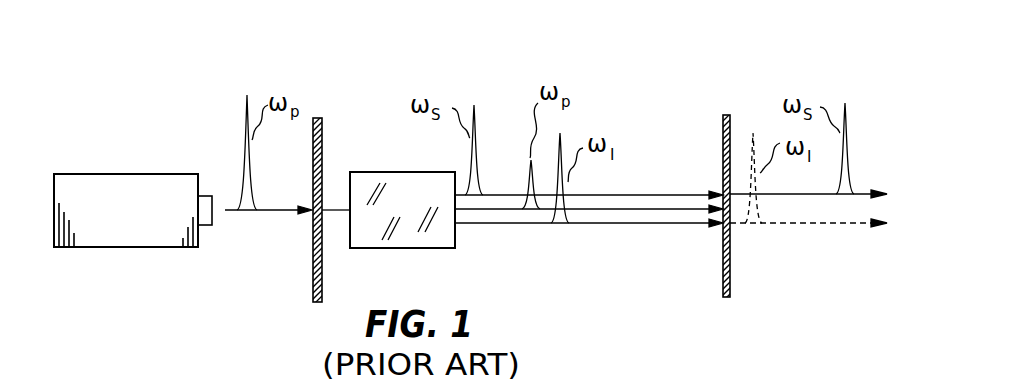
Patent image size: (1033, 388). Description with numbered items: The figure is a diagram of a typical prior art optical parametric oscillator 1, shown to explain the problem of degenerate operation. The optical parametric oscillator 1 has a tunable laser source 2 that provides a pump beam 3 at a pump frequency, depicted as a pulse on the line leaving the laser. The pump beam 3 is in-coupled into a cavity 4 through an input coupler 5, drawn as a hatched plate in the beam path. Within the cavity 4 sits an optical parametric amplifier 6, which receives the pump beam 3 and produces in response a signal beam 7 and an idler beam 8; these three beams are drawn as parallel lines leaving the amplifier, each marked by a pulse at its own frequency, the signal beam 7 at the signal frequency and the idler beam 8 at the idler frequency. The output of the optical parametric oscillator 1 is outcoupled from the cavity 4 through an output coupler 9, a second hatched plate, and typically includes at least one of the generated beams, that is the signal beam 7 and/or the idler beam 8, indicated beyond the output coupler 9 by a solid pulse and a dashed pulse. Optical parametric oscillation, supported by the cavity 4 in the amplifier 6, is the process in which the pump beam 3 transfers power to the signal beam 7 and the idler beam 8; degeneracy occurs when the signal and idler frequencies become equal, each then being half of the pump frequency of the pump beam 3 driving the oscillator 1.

The optical parametric oscillator 1 is at (620, 53).
The tunable laser source 2 is at (155, 174).
The pump beam 3 is at (268, 212).
The cavity 4 is at (652, 117).
The input coupler 5 is at (322, 120).
The optical parametric amplifier 6 is at (397, 172).
The signal beam 7 is at (497, 195).
The idler beam 8 is at (543, 224).
The output coupler 9 is at (731, 117).